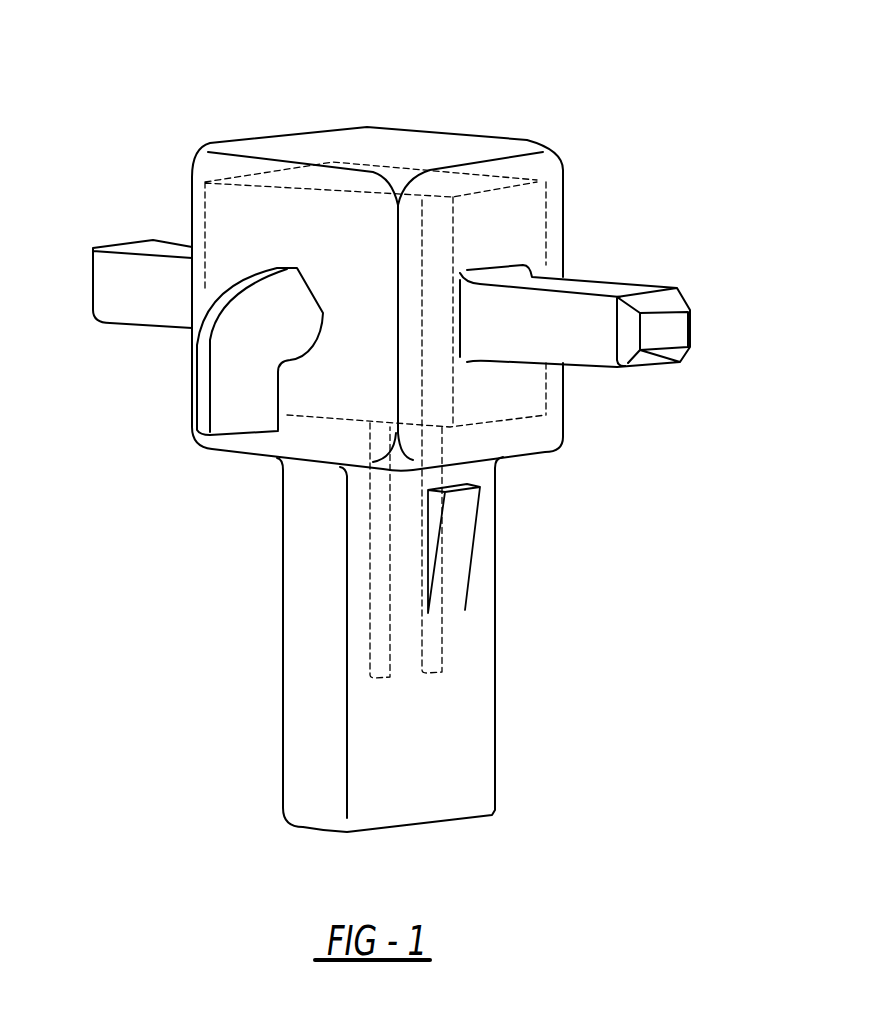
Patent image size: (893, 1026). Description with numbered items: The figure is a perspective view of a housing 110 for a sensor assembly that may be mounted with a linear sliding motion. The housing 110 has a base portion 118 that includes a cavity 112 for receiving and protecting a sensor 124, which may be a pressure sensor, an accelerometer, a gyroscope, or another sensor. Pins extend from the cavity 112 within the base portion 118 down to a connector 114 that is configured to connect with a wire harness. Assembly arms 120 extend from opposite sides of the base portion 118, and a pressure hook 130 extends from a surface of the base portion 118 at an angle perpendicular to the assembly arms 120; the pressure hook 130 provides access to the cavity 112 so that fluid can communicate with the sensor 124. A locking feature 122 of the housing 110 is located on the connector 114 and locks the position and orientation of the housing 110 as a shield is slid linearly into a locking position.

The housing 110 is at (503, 436).
The cavity 112 is at (482, 220).
The connector 114 is at (308, 740).
The base portion 118 is at (367, 143).
The assembly arms 120 is at (127, 267).
The locking feature 122 is at (463, 508).
The sensor 124 is at (453, 243).
The pressure hook 130 is at (227, 378).